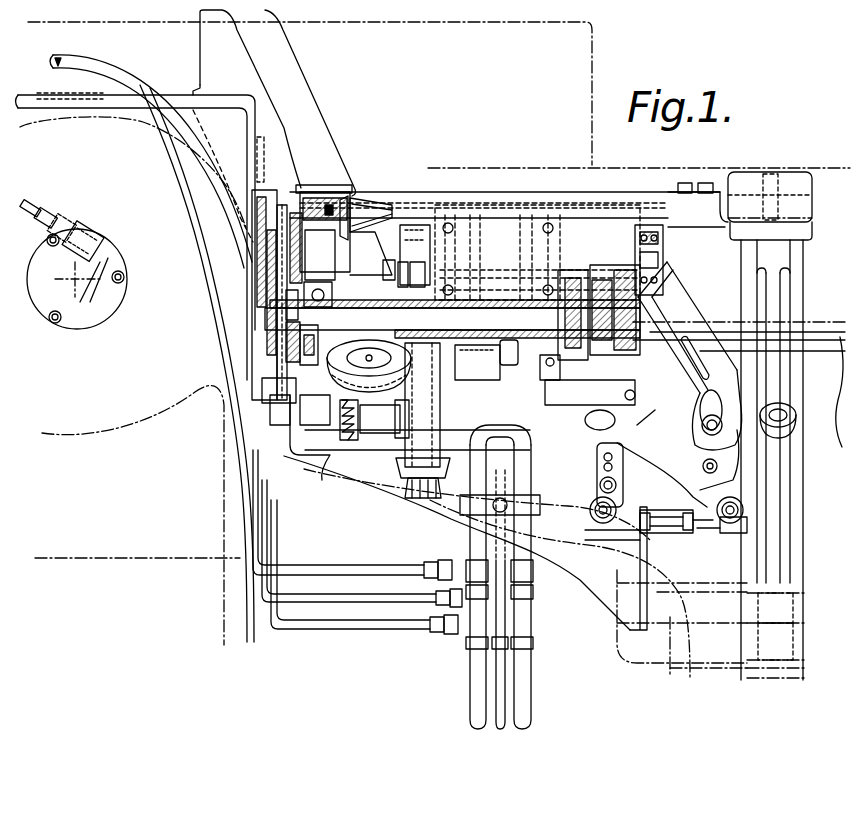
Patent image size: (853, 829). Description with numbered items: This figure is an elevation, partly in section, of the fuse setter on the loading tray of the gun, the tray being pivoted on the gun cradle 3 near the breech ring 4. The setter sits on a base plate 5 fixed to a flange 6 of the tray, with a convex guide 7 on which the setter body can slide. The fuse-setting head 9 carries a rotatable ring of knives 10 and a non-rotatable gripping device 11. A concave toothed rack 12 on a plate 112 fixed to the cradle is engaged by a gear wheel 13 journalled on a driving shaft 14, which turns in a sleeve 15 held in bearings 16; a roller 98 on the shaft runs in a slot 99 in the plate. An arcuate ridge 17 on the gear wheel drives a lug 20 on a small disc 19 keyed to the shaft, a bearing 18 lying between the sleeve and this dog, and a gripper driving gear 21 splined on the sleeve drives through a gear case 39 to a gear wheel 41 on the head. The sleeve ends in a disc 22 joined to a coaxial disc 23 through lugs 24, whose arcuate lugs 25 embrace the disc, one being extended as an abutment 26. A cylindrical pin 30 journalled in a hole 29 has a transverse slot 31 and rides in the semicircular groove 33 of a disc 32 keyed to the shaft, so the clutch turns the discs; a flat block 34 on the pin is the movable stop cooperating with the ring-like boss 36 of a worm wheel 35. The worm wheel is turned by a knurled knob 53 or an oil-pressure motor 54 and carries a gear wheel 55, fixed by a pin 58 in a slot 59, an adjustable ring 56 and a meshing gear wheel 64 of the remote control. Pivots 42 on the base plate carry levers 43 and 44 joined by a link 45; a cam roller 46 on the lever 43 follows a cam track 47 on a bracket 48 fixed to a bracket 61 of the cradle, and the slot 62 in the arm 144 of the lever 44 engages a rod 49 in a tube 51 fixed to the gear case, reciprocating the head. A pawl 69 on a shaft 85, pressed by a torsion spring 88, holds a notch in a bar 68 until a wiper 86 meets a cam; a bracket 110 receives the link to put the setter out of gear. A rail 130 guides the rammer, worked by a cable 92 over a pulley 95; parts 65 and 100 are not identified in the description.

The gun cradle 3 is at (668, 675).
The breech ring 4 is at (430, 166).
The base plate 5 is at (812, 394).
The flange or extension 6 is at (810, 455).
The convex guide 7 is at (495, 300).
The fuse-setting head 9 is at (344, 200).
The ring of knives 10 is at (365, 200).
The non-rotatable gripping device 11 is at (372, 252).
The toothed rack 12 is at (277, 266).
The gear wheel 13 is at (288, 290).
The driving shaft 14 is at (370, 312).
The sleeve 15 is at (421, 268).
The bearings 16 is at (501, 323).
The arcuate ridge 17 is at (266, 249).
The bearing 18 is at (255, 410).
The small disc 19 is at (300, 338).
The projecting lug 20 is at (570, 300).
The gripper driving gear 21 is at (335, 288).
The disc 22 is at (560, 305).
The coaxial disc 23 is at (620, 365).
The lugs 24 is at (582, 368).
The arcuate lugs 25 is at (572, 366).
The block or abutment 26 is at (549, 367).
The hole 29 is at (596, 250).
The cylindrical pin 30 is at (560, 240).
The transverse slot 31 is at (580, 240).
The disc 32 is at (560, 300).
The semicircular groove 33 is at (568, 315).
The flat block 34 is at (612, 250).
The worm wheel 35 is at (640, 389).
The ring-like boss 36 is at (616, 372).
The gear case 39 is at (314, 223).
The gear wheel 41 is at (320, 190).
The pivots 42 is at (700, 422).
The lever 43 is at (442, 478).
The lever 44 is at (733, 488).
The link 45 is at (692, 535).
The cam roller 46 is at (508, 587).
The cam track 47 is at (570, 545).
The bracket 48 is at (598, 600).
The rod 49 is at (655, 262).
The tube 51 is at (404, 268).
The knurled knob 53 is at (633, 415).
The oil-pressure driven motor 54 is at (660, 460).
The gear wheel 55 is at (690, 325).
The ring 56 is at (673, 387).
The pin 58 is at (601, 310).
The slot 59 is at (615, 310).
The bracket 61 is at (805, 557).
The long slot 62 is at (673, 257).
The gear wheel 64 is at (645, 230).
The housing 65 is at (505, 205).
The bar 68 is at (482, 358).
The pawl 69 is at (500, 470).
The shaft 85 is at (388, 420).
The lever or wiper 86 is at (300, 470).
The torsion spring 88 is at (352, 430).
The cable 92 is at (415, 255).
The pulley 95 is at (375, 345).
The roller 98 is at (286, 320).
The slot 99 is at (286, 302).
The shaft 100 is at (531, 318).
The bracket 110 is at (668, 527).
The plate 112 is at (258, 213).
The rail 130 is at (816, 330).
The arm 144 is at (730, 311).